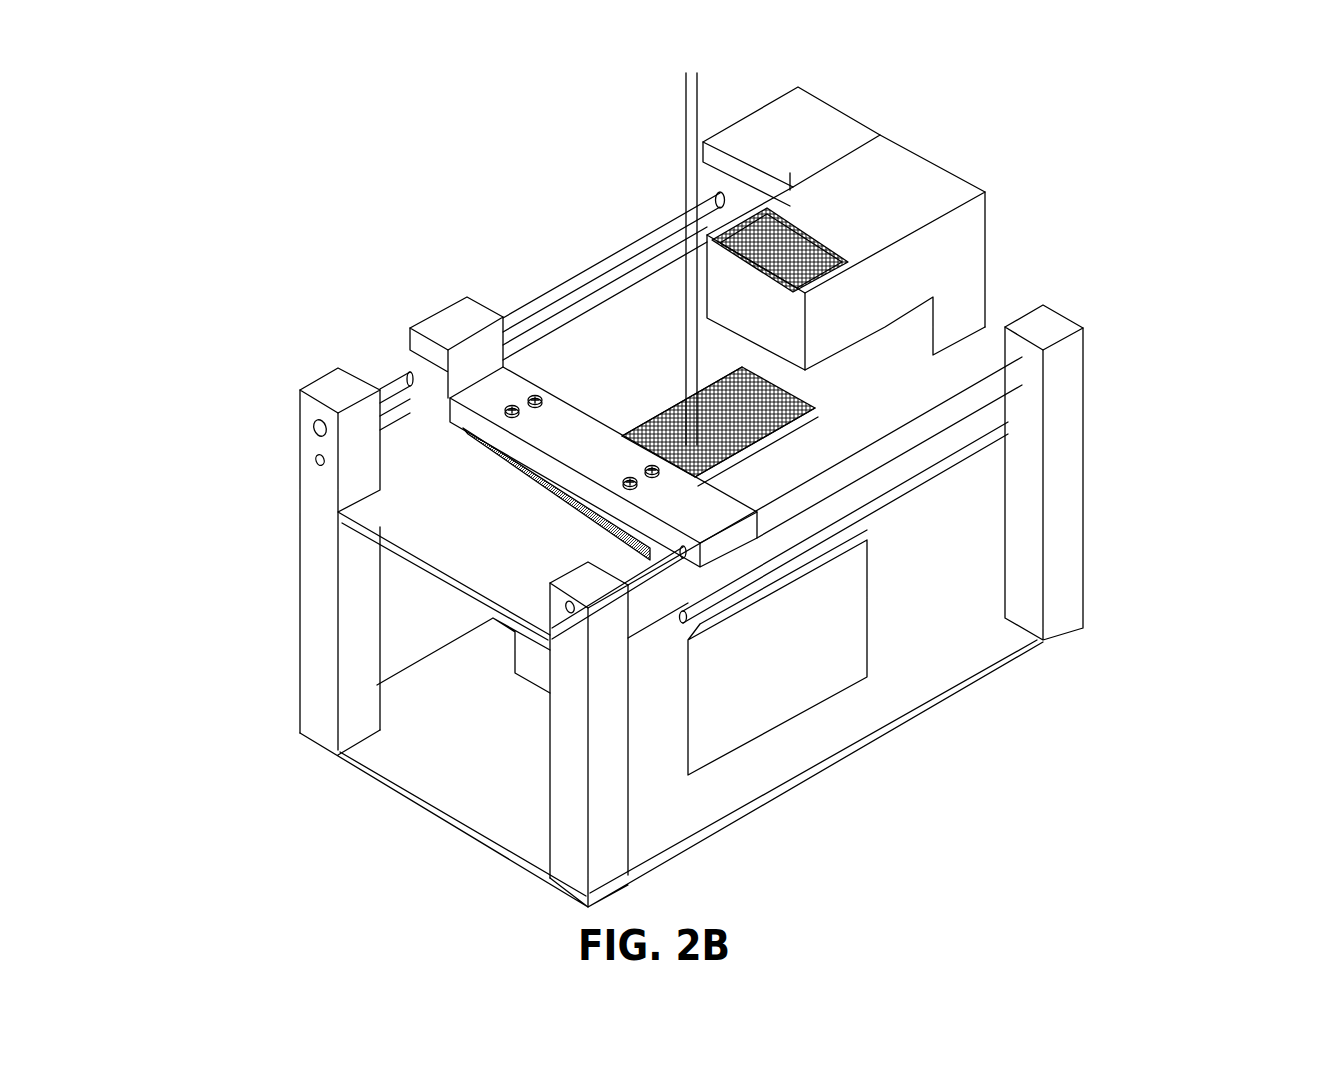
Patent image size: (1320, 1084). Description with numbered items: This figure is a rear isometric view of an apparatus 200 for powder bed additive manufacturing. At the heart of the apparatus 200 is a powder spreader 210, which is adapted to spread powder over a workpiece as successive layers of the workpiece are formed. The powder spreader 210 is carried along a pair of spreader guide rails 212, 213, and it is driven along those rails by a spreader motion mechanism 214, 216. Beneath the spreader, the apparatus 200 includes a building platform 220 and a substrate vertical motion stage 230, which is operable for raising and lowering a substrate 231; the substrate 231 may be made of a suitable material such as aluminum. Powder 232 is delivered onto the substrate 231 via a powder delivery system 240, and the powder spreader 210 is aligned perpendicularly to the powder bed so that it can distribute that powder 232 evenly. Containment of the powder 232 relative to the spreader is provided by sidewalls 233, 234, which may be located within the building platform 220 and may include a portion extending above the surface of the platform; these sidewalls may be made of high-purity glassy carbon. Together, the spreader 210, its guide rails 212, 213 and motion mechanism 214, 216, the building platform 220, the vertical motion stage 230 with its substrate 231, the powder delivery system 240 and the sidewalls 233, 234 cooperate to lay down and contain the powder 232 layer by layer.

The apparatus 200 is at (1203, 63).
The powder spreader 210 is at (497, 388).
The spreader guide rail 212 is at (860, 442).
The spreader guide rail 213 is at (600, 322).
The spreader motion mechanism 214 is at (810, 130).
The spreader motion mechanism 216 is at (582, 268).
The building platform 220 is at (435, 520).
The substrate vertical motion stage 230 is at (810, 660).
The substrate 231 is at (847, 535).
The powder 232 is at (770, 410).
The sidewall 233 is at (663, 400).
The sidewall 234 is at (775, 438).
The powder delivery system 240 is at (930, 268).